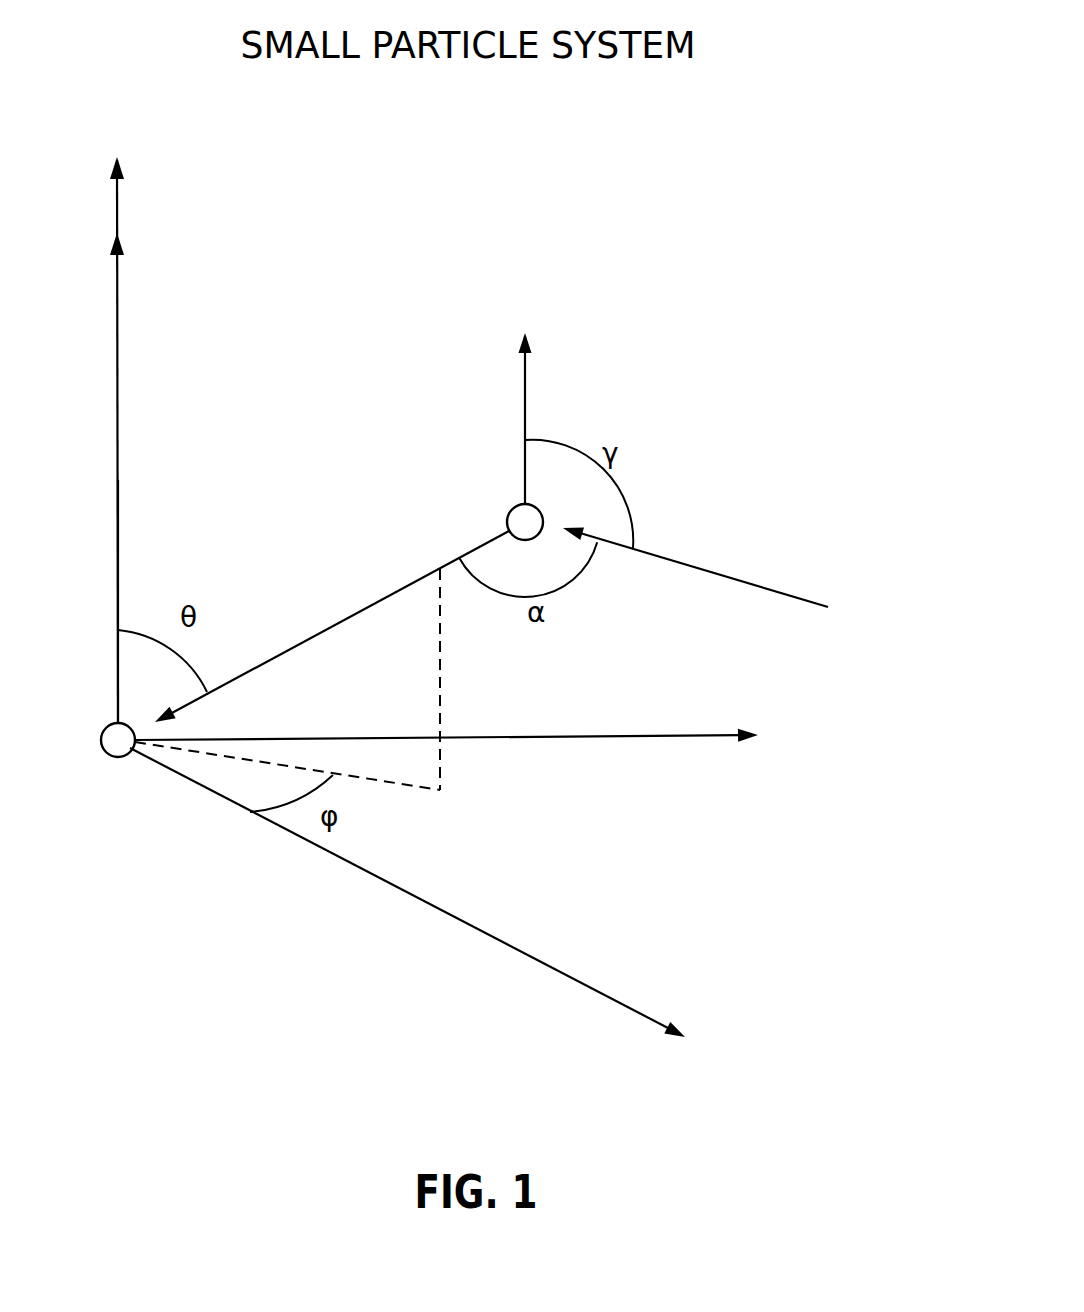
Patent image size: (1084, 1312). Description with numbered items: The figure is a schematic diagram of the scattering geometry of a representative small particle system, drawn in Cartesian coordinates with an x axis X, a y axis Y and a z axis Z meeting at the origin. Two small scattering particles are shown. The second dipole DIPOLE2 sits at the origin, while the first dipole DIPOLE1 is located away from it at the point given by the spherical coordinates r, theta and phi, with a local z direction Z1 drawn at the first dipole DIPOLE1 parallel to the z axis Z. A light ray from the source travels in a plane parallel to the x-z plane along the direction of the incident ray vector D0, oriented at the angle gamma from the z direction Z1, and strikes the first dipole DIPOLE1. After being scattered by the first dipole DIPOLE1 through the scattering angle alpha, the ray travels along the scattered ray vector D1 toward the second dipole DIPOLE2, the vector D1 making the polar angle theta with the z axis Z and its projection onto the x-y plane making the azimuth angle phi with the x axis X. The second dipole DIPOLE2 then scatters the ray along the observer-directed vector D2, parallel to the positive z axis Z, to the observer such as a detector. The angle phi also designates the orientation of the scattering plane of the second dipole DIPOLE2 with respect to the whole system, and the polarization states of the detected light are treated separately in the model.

The incident ray direction vector D0 is at (748, 586).
The scattered ray direction vector D1 is at (332, 626).
The observer-directed ray vector D2 is at (144, 585).
The z axis Z is at (112, 404).
The z axis at Dipole 1 Z1 is at (540, 418).
The x axis X is at (407, 905).
The y axis Y is at (446, 753).
The Dipole 1 DIPOLE1 is at (465, 516).
The Dipole 2 DIPOLE2 is at (116, 763).